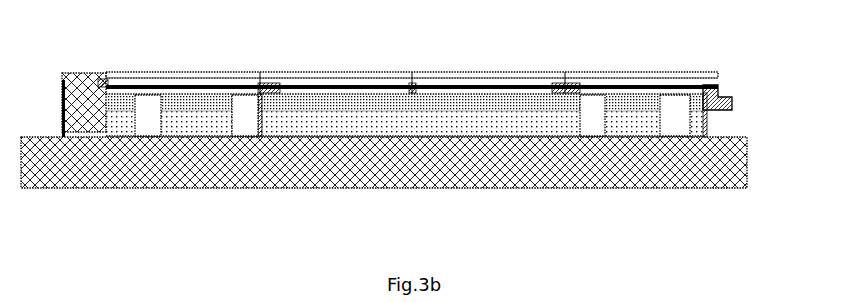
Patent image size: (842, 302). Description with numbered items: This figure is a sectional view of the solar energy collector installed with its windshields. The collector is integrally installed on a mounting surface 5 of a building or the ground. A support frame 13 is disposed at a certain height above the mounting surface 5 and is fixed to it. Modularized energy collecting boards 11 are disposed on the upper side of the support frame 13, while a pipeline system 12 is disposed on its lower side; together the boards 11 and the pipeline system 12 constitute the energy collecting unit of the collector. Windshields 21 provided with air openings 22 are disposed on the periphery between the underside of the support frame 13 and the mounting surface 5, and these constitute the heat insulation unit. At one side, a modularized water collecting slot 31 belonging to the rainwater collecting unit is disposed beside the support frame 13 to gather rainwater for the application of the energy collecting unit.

The mounting surface 5 is at (412, 188).
The energy collecting board 11 is at (412, 61).
The pipeline system 12 is at (672, 66).
The support frame 13 is at (408, 61).
The windshield 21 is at (406, 84).
The air opening 22 is at (467, 162).
The water collecting slot 31 is at (62, 83).